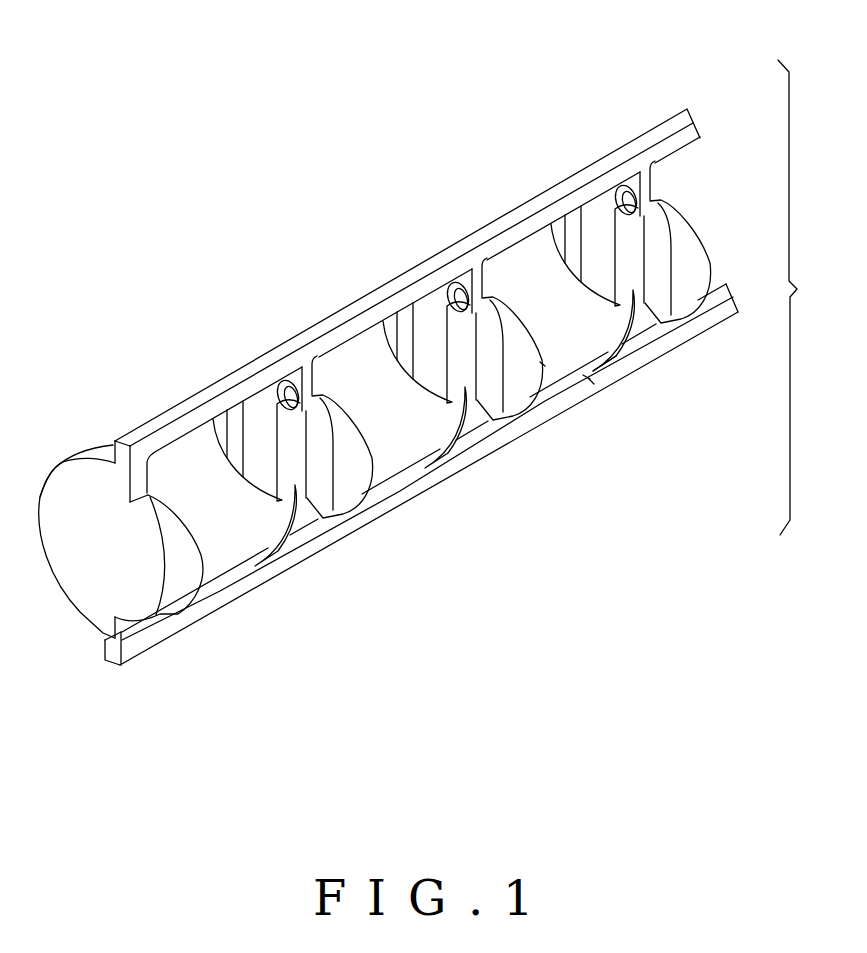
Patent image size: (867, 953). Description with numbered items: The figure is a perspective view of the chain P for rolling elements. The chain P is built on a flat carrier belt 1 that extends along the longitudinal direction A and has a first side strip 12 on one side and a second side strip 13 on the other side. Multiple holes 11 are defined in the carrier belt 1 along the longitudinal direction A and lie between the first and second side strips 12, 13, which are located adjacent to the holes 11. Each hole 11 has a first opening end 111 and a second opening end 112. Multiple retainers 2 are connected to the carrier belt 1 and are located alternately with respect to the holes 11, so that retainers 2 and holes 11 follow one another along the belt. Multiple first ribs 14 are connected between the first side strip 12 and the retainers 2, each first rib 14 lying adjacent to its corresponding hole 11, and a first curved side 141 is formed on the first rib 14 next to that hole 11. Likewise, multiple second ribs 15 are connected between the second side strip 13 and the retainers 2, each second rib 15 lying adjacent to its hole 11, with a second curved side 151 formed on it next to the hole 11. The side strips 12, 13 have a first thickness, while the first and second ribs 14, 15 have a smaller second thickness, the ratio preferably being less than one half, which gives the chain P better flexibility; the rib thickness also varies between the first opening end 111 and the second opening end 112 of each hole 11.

The carrier belt 1 is at (800, 297).
The hole 11 is at (545, 366).
The first opening end 111 is at (587, 377).
The second opening end 112 is at (590, 380).
The first side strip 12 is at (688, 136).
The second side strip 13 is at (713, 313).
The first rib 14 is at (636, 186).
The first curved side 141 is at (652, 209).
The second rib 15 is at (640, 322).
The second curved side 151 is at (620, 347).
The retainer 2 is at (352, 473).
The chain P is at (268, 328).
The longitudinal direction A is at (475, 53).